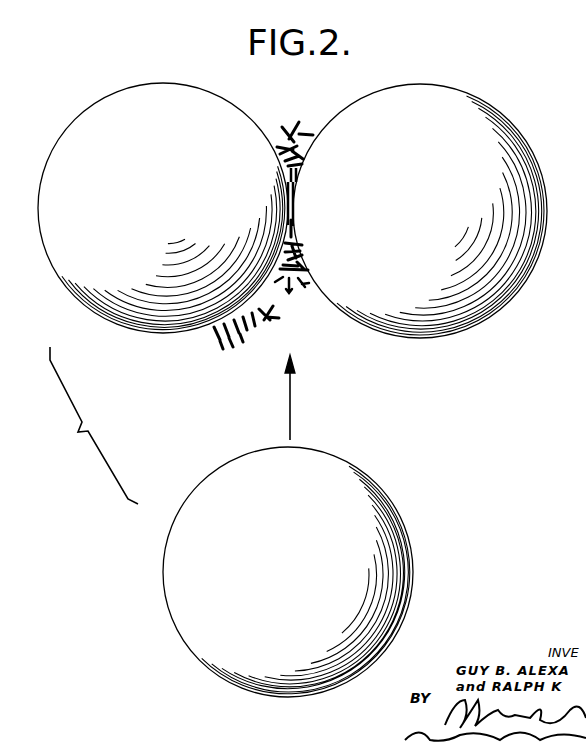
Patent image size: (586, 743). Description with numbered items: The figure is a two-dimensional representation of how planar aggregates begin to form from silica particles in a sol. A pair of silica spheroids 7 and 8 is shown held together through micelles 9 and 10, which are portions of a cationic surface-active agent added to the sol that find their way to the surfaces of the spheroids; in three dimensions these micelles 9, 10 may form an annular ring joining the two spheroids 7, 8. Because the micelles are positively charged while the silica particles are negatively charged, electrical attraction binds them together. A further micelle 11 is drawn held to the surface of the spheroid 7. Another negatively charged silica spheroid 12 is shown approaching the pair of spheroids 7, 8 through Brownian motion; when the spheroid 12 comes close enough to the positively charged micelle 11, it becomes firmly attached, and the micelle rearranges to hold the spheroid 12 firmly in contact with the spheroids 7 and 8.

The silica spheroid 7 is at (163, 208).
The silica spheroid 8 is at (420, 211).
The micelle 9 is at (303, 127).
The micelle 10 is at (296, 298).
The micelle 11 is at (209, 341).
The silica spheroid 12 is at (288, 572).